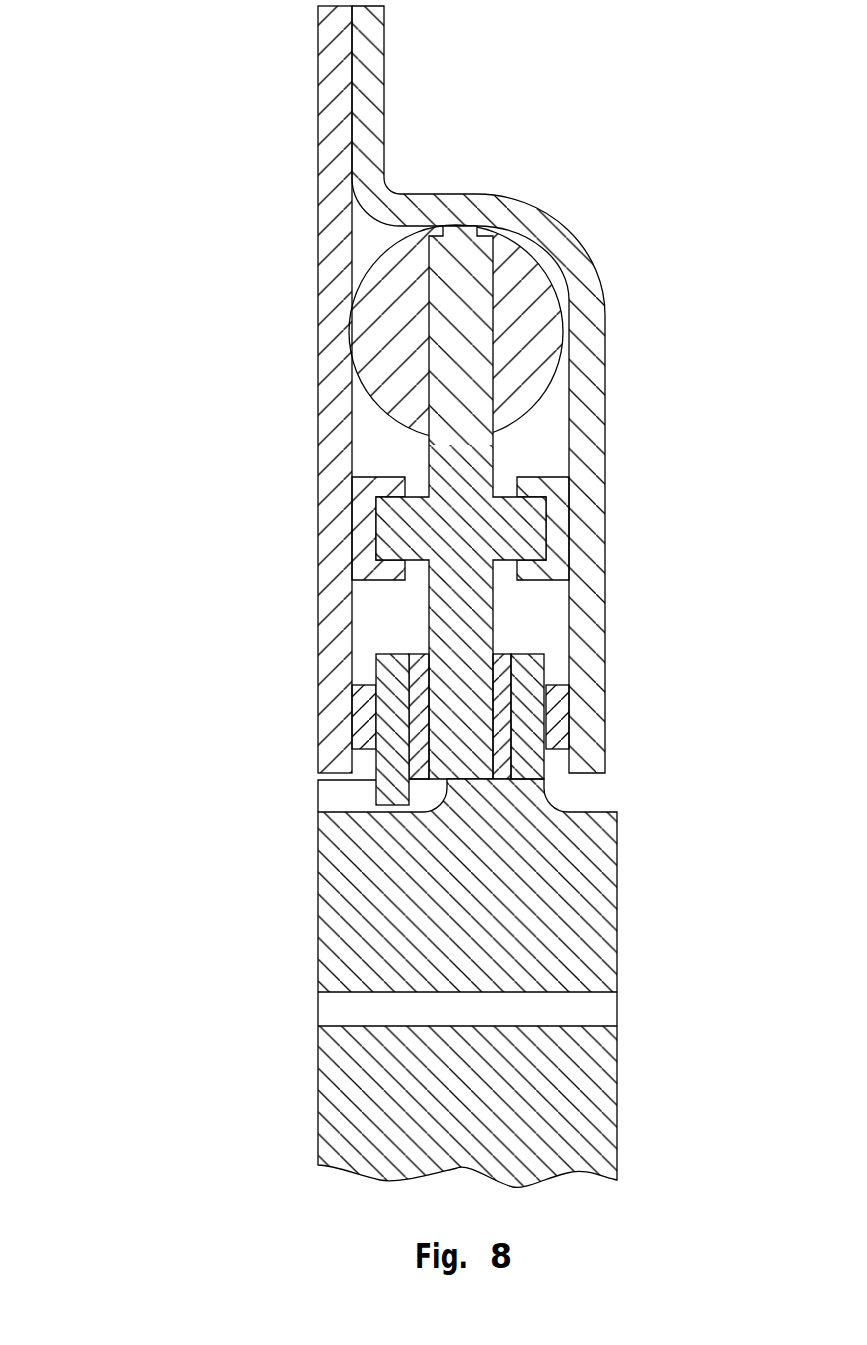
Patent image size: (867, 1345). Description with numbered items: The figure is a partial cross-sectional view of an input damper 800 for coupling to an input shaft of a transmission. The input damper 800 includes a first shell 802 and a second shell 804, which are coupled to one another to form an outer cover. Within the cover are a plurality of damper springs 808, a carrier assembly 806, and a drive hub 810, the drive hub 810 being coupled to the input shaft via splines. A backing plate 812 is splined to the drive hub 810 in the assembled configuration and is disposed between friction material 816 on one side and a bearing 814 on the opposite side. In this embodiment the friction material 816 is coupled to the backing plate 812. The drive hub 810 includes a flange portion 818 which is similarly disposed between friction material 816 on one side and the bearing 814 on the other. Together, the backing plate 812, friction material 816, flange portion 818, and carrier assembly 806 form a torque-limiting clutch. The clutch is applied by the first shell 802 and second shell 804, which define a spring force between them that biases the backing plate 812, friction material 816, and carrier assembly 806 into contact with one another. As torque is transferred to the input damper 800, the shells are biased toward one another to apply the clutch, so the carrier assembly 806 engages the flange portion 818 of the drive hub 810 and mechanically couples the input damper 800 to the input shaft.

The input damper 800 is at (131, 126).
The first shell 802 is at (320, 192).
The second shell 804 is at (453, 200).
The carrier assembly 806 is at (407, 521).
The damper springs 808 is at (533, 393).
The drive hub 810 is at (618, 922).
The backing plate 812 is at (387, 753).
The bearing 814 is at (357, 708).
The friction material 816 is at (418, 663).
The flange portion 818 is at (550, 772).